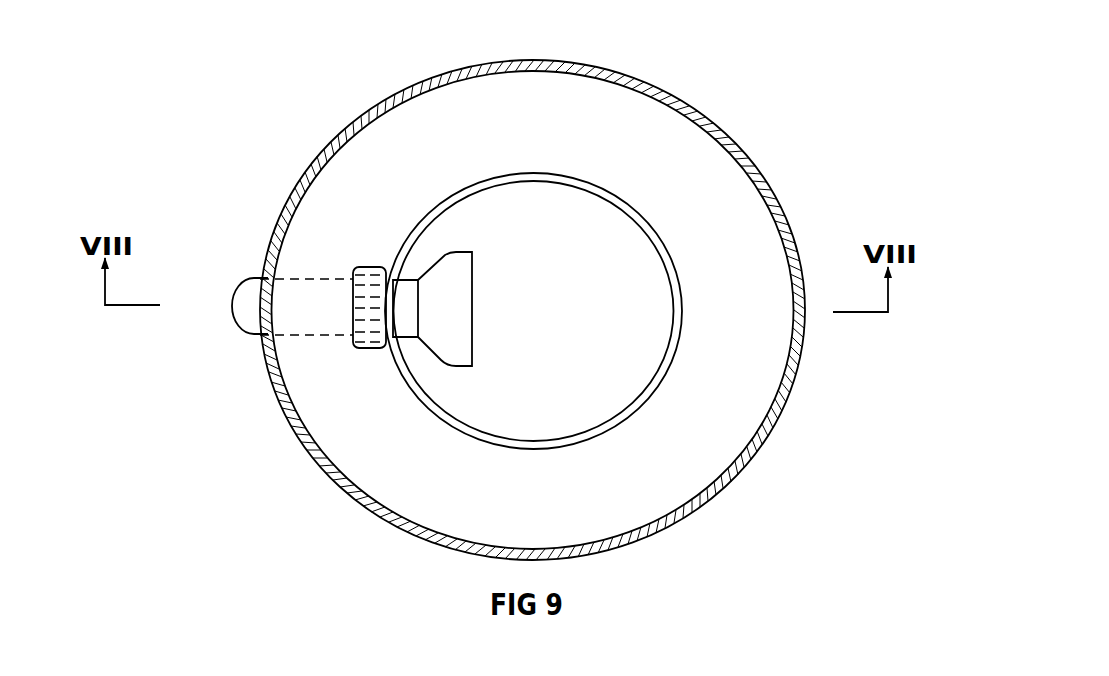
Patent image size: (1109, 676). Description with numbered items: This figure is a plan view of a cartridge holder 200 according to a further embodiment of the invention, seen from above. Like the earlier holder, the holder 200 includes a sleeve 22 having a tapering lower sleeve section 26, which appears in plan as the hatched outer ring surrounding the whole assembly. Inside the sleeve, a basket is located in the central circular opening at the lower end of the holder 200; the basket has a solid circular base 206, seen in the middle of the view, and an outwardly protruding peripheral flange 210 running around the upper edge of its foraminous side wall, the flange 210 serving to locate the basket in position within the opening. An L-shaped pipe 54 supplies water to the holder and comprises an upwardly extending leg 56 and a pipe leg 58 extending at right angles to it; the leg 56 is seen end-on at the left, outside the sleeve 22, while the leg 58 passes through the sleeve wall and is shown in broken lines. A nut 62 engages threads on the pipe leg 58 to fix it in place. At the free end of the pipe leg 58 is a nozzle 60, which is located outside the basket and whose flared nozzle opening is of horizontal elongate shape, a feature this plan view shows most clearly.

The holder 200 is at (519, 285).
The sleeve 22 is at (566, 310).
The tapering lower sleeve section 26 is at (743, 462).
The peripheral flange 210 is at (632, 212).
The circular base 206 is at (585, 368).
The nozzle 60 is at (448, 297).
The L-shaped pipe 54 is at (276, 305).
The upwardly extending leg 56 is at (238, 313).
The pipe leg 58 is at (313, 287).
The nut 62 is at (373, 337).